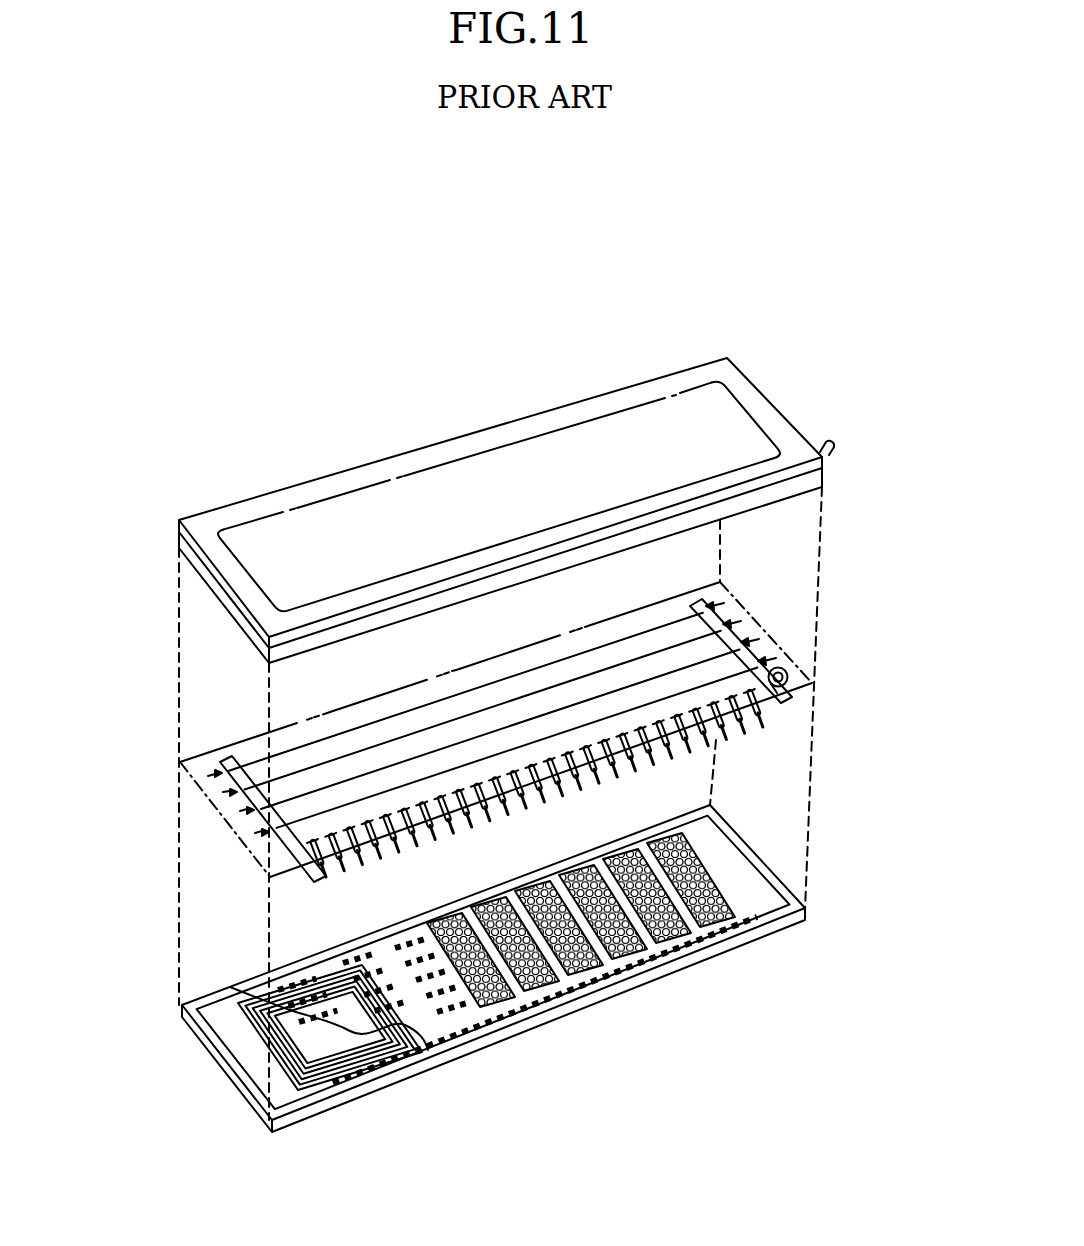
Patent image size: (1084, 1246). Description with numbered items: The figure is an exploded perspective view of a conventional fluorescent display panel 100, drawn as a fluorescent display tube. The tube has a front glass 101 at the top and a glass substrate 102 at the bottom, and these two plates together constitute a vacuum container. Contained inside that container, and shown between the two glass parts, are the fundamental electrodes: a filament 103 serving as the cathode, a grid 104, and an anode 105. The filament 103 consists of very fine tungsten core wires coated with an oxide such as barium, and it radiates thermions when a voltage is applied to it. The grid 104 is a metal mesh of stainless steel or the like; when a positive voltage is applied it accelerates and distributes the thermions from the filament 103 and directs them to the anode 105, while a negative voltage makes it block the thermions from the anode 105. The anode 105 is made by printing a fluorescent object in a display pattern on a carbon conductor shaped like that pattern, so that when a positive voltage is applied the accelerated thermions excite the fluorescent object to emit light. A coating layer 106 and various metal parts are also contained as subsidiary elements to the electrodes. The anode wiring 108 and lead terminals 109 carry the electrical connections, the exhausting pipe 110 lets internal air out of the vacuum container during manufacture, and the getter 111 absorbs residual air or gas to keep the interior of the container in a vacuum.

The fluorescent display panel 100 is at (636, 327).
The front glass 101 is at (562, 402).
The glass substrate 102 is at (595, 1007).
The filament 103 is at (297, 743).
The grid 104 is at (478, 1010).
The anode 105 is at (315, 980).
The coating layer 106 is at (238, 999).
The anode wiring 108 is at (256, 1041).
The lead terminals 109 is at (758, 752).
The exhausting pipe 110 is at (826, 445).
The getter 111 is at (787, 668).